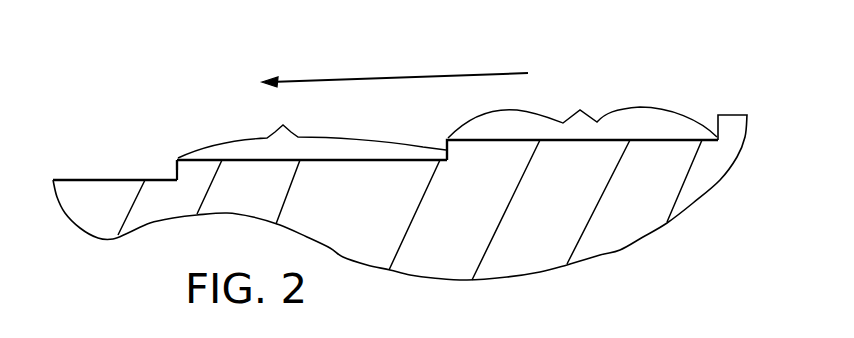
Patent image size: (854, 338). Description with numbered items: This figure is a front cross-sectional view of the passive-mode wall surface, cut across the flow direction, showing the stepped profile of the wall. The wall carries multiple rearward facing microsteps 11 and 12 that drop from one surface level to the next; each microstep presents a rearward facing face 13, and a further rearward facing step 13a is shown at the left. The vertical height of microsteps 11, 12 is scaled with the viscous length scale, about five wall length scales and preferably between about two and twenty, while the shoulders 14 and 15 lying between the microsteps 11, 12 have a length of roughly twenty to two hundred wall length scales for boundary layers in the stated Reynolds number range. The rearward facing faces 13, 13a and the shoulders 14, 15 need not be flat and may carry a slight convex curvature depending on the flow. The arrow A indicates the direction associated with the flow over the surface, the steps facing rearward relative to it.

The rearward facing microstep 11 is at (178, 158).
The rearward facing microstep 12 is at (446, 137).
The rearward facing face 13 is at (445, 149).
The rearward facing step 13a is at (176, 169).
The shoulder 14 is at (578, 111).
The shoulder 15 is at (312, 128).
The direction of movement A is at (307, 80).